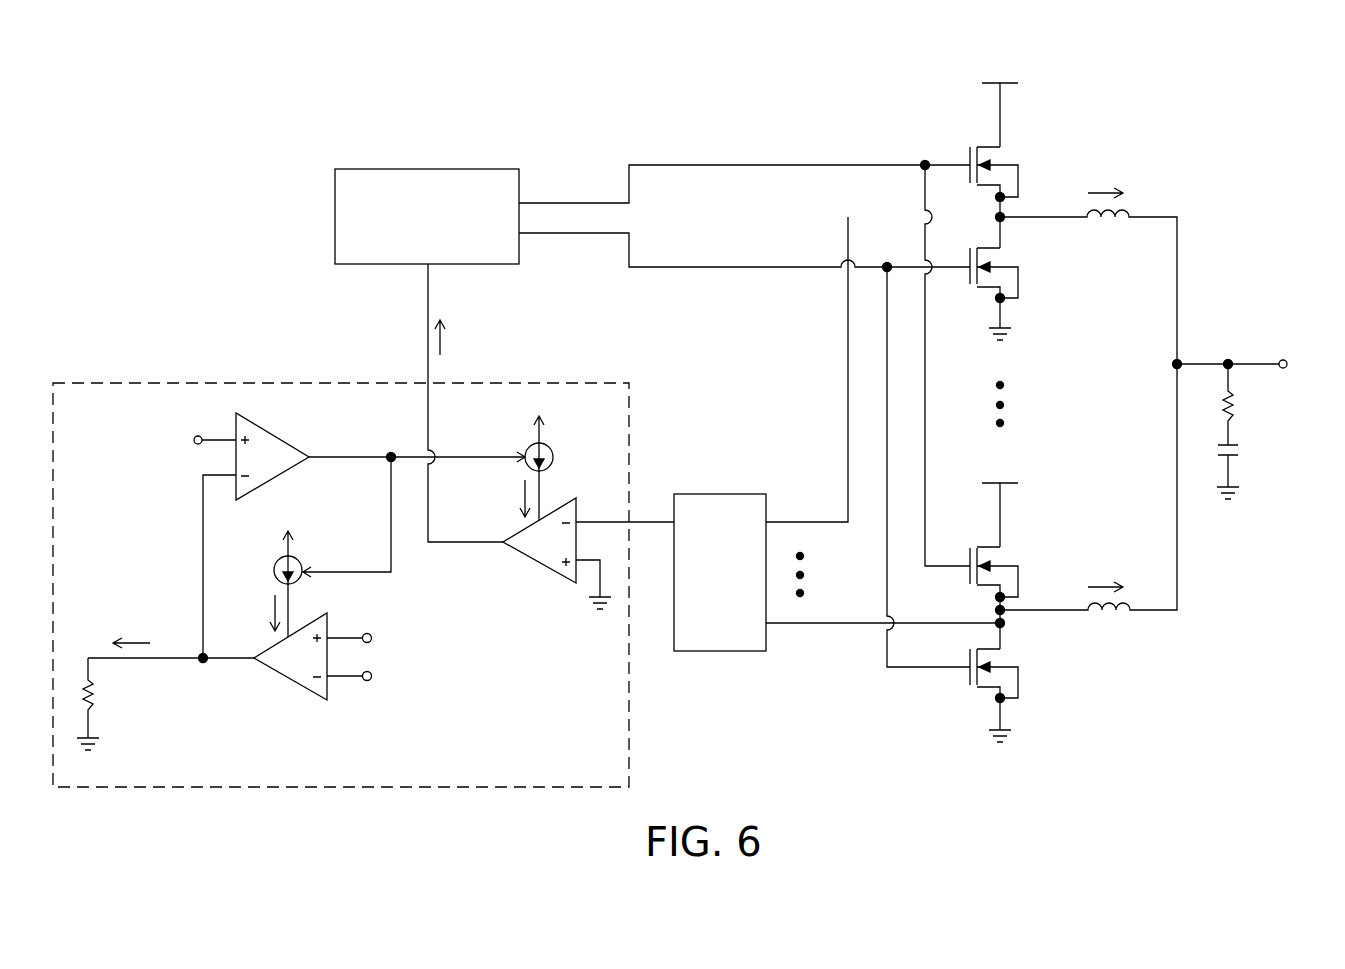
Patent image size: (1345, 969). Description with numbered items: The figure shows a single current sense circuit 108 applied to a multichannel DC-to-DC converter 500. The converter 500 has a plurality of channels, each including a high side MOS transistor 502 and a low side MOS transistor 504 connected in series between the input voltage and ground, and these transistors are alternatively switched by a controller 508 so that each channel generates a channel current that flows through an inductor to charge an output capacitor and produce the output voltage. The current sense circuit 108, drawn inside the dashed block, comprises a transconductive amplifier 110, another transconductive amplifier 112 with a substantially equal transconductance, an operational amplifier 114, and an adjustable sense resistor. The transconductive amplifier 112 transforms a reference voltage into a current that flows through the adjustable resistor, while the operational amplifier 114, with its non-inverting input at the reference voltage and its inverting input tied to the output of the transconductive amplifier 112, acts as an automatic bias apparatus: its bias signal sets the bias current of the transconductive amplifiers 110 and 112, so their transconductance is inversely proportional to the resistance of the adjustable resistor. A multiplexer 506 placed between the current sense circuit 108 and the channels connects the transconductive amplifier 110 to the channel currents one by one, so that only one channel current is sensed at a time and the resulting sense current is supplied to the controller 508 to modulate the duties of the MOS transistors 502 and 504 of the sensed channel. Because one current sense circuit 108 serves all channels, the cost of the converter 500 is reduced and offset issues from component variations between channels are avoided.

The current sense circuit 108 is at (243, 383).
The transconductive amplifier 110 is at (537, 562).
The transconductive amplifier 112 is at (283, 675).
The operational amplifier 114 is at (277, 438).
The DC-to-DC converter 500 is at (1206, 118).
The high side MOS transistor 502 is at (1033, 139).
The low side MOS transistor 504 is at (1030, 275).
The multiplexer 506 is at (720, 494).
The controller 508 is at (335, 215).